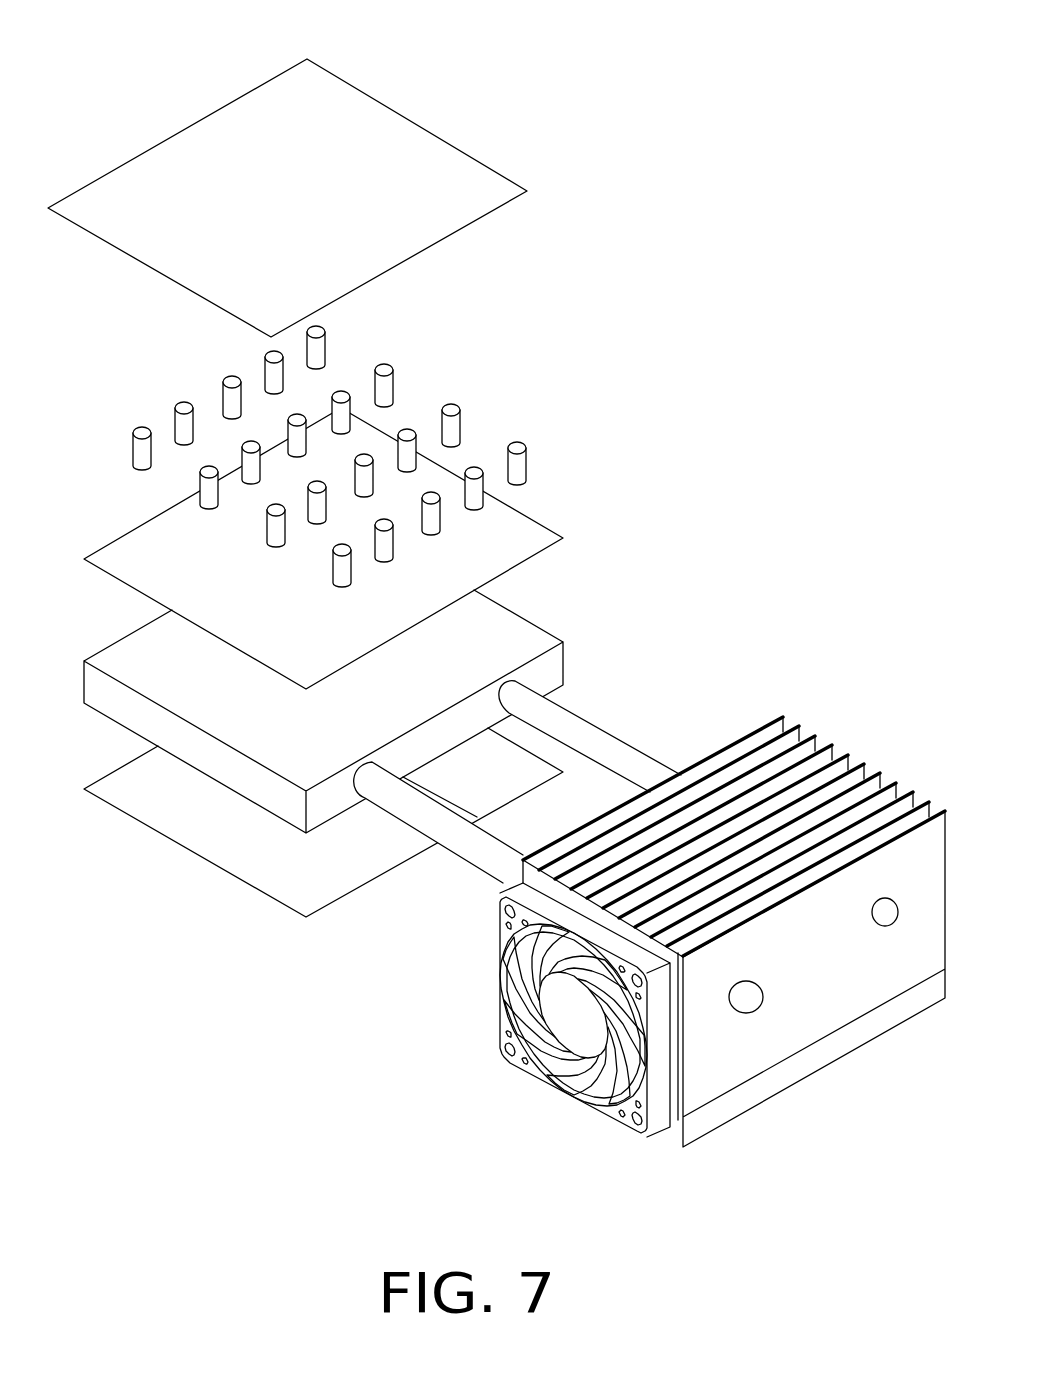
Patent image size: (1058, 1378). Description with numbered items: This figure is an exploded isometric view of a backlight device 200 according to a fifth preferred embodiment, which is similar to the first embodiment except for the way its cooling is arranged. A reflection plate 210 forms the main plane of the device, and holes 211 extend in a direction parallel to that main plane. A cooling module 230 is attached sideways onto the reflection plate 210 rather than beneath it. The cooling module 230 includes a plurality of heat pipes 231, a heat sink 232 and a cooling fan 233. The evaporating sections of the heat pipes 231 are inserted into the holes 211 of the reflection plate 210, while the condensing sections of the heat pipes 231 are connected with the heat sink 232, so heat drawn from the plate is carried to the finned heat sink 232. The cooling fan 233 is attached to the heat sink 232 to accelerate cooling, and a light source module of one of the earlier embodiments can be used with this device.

The backlight device 200 is at (573, 27).
The reflection plate 210 is at (527, 637).
The holes 211 is at (352, 785).
The cooling module 230 is at (614, 1223).
The heat pipes 231 is at (485, 847).
The heat sink 232 is at (708, 1062).
The cooling fan 233 is at (517, 1065).